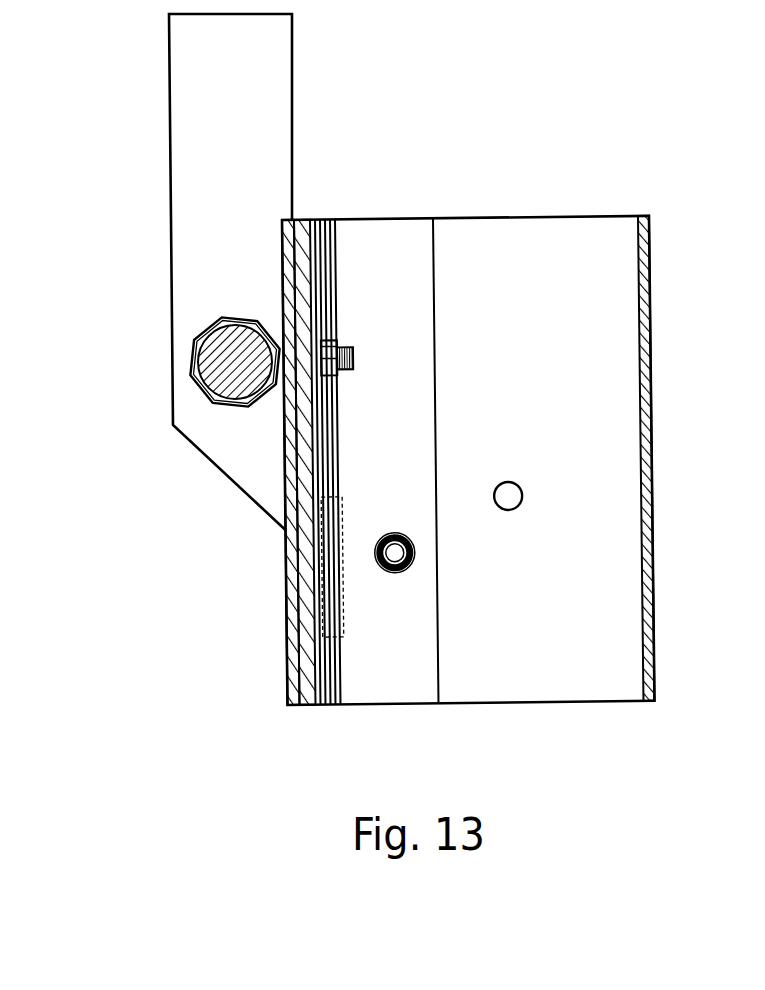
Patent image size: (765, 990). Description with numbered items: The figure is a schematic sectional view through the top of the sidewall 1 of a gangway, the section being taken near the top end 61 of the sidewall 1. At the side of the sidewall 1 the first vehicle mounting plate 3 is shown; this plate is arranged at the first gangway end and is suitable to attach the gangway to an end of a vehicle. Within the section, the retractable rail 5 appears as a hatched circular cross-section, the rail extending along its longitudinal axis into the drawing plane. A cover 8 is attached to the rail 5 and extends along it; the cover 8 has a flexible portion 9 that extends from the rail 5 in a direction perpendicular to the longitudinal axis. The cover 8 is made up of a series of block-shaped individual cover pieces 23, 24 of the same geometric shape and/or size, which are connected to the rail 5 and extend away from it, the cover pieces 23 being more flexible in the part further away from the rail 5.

The sidewall 1 is at (632, 170).
The first vehicle mounting plate 3 is at (500, 232).
The retractable rail 5 is at (217, 365).
The cover 8 is at (185, 109).
The flexible portion 9 is at (185, 47).
The cover piece 23 is at (187, 190).
The cover piece 24 is at (193, 353).
The top end 61 is at (300, 233).